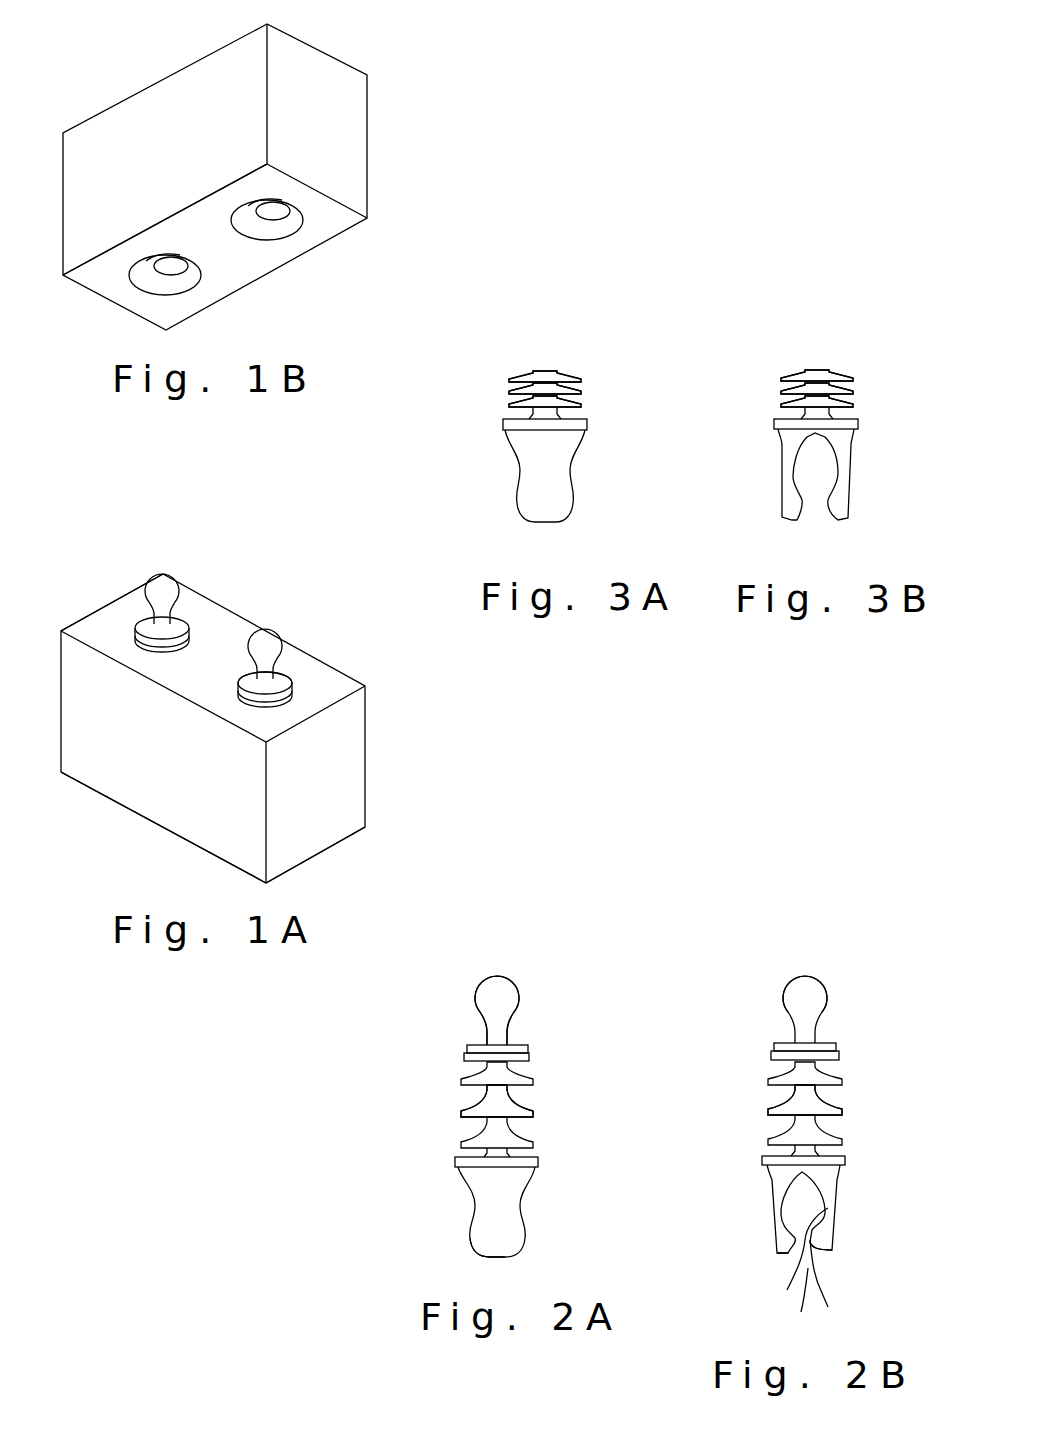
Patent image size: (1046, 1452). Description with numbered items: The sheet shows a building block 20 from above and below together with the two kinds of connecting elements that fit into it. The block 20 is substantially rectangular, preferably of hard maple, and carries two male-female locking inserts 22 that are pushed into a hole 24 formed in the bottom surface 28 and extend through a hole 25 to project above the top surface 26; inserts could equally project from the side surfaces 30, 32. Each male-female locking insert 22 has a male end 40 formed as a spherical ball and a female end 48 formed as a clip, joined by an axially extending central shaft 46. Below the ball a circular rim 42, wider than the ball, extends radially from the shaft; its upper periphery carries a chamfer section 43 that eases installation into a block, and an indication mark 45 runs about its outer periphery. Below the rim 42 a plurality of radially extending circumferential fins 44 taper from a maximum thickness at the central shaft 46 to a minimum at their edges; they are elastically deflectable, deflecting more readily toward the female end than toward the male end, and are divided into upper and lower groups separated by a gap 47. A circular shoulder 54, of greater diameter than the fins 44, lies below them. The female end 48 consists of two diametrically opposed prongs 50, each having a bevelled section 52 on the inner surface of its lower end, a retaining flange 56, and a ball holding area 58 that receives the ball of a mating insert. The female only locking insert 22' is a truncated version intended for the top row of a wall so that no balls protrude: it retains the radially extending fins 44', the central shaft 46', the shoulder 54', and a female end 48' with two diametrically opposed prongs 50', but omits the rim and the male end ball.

In FIG. 1B, the building block 20 is at (377, 125).
In FIG. 1A, the building block 20 is at (386, 724).
In FIG. 1B, the male-female locking insert 22 is at (248, 251).
In FIG. 1A, the male-female locking insert 22 is at (243, 640).
In FIG. 2A, the male-female locking insert 22 is at (548, 984).
In FIG. 2B, the male-female locking insert 22 is at (856, 991).
In FIG. 3A, the female only locking insert 22' is at (572, 343).
In FIG. 3B, the female only locking insert 22' is at (843, 343).
In FIG. 1B, the hole 24 is at (297, 220).
In FIG. 1A, the hole 25 is at (293, 690).
In FIG. 1A, the top surface 26 is at (105, 618).
In FIG. 1B, the bottom surface 28 is at (249, 268).
In FIG. 1A, the surface 30 is at (218, 832).
In FIG. 1A, the surface 32 is at (353, 820).
In FIG. 2A, the male end 40 is at (496, 977).
In FIG. 2B, the male end 40 is at (805, 978).
In FIG. 2A, the circular rim 42 is at (467, 1048).
In FIG. 2B, the circular rim 42 is at (775, 1047).
In FIG. 2A, the chamfer section 43 is at (527, 1045).
In FIG. 2A, the radially extending circumferential fins 44 is at (547, 1107).
In FIG. 2B, the radially extending circumferential fins 44 is at (853, 1105).
In FIG. 3A, the radially extending fins 44' is at (508, 403).
In FIG. 3B, the radially extending fins 44' is at (785, 374).
In FIG. 2A, the indication mark 45 is at (529, 1054).
In FIG. 2A, the central shaft 46 is at (446, 1158).
In FIG. 2B, the central shaft 46 is at (763, 1165).
In FIG. 3A, the central shaft 46' is at (598, 411).
In FIG. 3B, the central shaft 46' is at (855, 412).
In FIG. 2A, the gap 47 is at (477, 1102).
In FIG. 2B, the gap 47 is at (784, 1101).
In FIG. 2A, the female end 48 is at (539, 1214).
In FIG. 2B, the female end 48 is at (849, 1209).
In FIG. 3A, the female end 48' is at (567, 501).
In FIG. 2A, the prong 50 is at (458, 1264).
In FIG. 2B, the prong 50 is at (819, 1271).
In FIG. 3B, the prong 50' is at (852, 503).
In FIG. 2B, the bevelled section 52 is at (838, 1284).
In FIG. 2A, the shoulder 54 is at (537, 1156).
In FIG. 2B, the shoulder 54 is at (851, 1155).
In FIG. 3A, the shoulder 54' is at (585, 442).
In FIG. 2B, the retaining flange 56 is at (806, 1309).
In FIG. 2B, the ball holding area 58 is at (792, 1264).